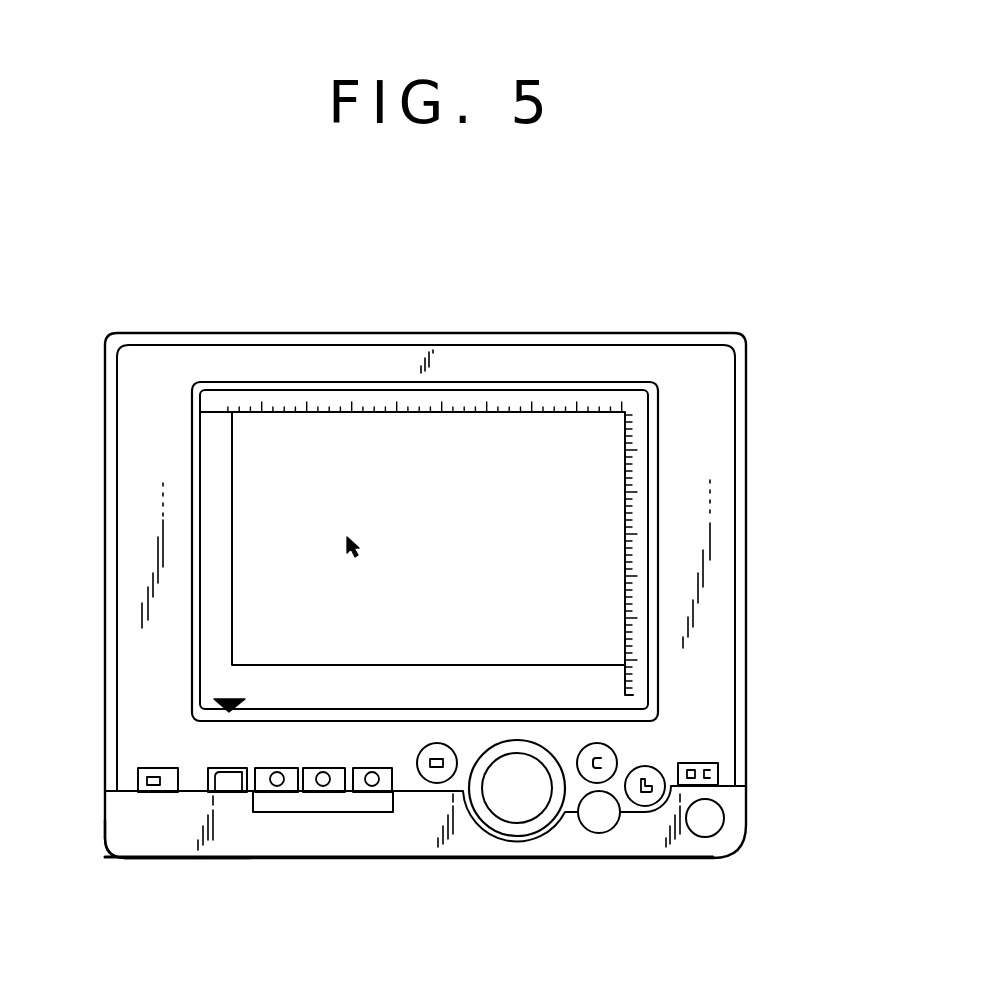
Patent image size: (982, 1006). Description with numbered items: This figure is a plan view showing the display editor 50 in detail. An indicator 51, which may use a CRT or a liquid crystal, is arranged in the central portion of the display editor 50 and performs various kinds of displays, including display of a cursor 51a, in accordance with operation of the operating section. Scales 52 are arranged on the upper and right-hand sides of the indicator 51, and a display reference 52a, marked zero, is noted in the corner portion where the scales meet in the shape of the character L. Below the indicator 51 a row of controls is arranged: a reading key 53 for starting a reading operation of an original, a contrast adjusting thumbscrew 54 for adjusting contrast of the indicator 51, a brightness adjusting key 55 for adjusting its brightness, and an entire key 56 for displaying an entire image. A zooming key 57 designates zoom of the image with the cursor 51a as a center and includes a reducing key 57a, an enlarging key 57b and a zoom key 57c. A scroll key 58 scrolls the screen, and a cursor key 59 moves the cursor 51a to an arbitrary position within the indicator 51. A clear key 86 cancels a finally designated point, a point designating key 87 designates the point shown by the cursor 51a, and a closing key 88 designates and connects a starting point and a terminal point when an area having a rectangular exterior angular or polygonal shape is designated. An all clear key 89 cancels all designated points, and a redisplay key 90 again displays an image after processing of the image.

The display editor 50 is at (604, 334).
The indicator 51 is at (300, 465).
The cursor 51a is at (355, 537).
The scales 52 is at (368, 393).
The display reference (0) 52a is at (625, 403).
The reading key 53 is at (165, 772).
The contrast adjusting thumbscrew 54 is at (168, 860).
The brightness adjusting key 55 is at (207, 860).
The entire key 56 is at (233, 793).
The zooming key 57 is at (323, 812).
The reducing key 57a is at (277, 792).
The enlarging key 57b is at (333, 792).
The zoom key 57c is at (373, 783).
The scroll key 58 is at (437, 783).
The cursor key 59 is at (512, 837).
The clear key 86 is at (595, 743).
The point designating key 87 is at (600, 818).
The closing key 88 is at (648, 800).
The all clear key 89 is at (718, 772).
The redisplay key 90 is at (712, 820).